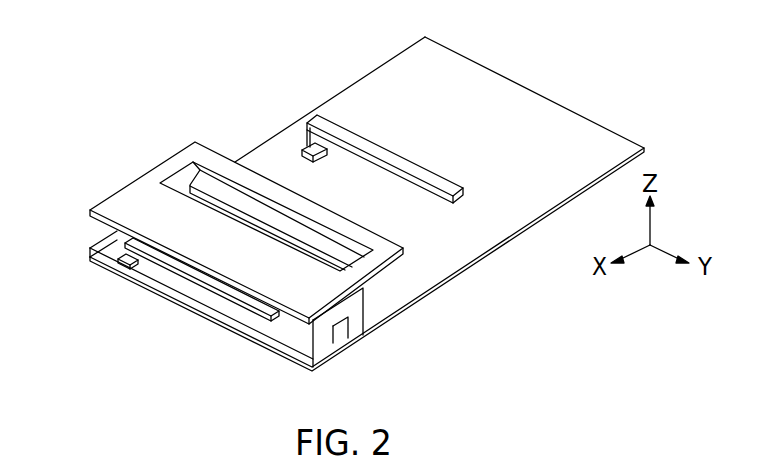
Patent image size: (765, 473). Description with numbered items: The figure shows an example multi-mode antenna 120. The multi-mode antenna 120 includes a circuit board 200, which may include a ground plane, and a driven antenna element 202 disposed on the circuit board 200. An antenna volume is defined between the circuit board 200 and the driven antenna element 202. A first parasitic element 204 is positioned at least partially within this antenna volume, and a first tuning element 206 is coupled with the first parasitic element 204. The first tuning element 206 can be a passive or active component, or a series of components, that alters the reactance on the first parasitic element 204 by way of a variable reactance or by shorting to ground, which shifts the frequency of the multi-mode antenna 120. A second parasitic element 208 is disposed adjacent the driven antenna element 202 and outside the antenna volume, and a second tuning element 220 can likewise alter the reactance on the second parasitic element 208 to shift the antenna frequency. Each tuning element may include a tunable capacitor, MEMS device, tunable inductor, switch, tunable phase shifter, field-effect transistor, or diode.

The multi-mode antenna 120 is at (117, 73).
The circuit board 200 is at (346, 84).
The driven antenna element 202 is at (134, 181).
The first parasitic element 204 is at (232, 301).
The first tuning element 206 is at (111, 265).
The second parasitic element 208 is at (417, 163).
The second tuning element 220 is at (307, 158).